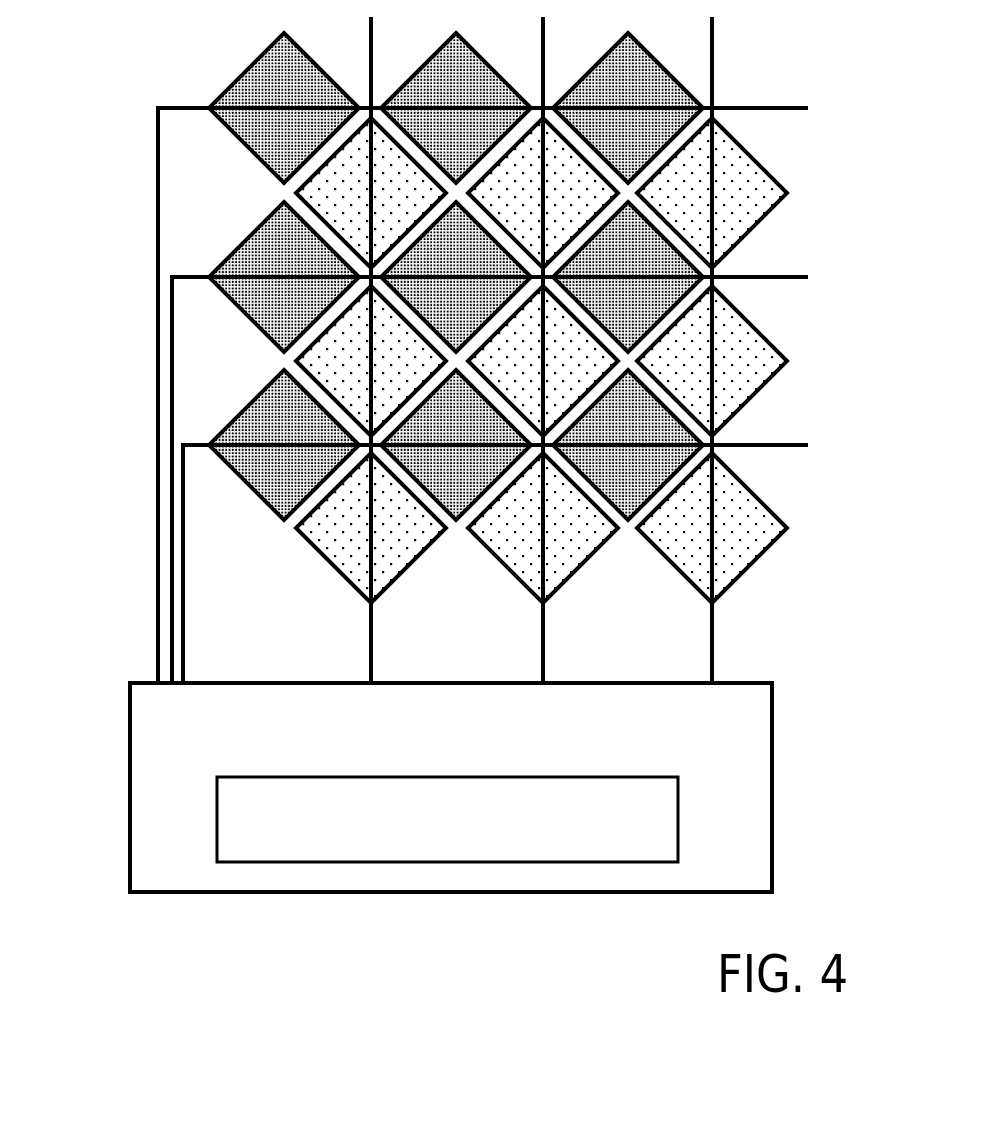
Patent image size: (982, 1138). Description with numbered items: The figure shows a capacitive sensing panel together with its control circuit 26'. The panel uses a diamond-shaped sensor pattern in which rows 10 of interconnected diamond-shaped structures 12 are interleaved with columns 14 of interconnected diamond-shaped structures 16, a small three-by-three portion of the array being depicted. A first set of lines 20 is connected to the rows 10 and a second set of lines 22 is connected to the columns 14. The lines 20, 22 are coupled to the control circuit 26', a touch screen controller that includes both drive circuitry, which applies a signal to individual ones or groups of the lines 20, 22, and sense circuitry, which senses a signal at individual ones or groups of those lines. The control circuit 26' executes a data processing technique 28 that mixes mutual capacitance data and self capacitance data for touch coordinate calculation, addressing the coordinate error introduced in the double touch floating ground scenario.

The rows 10 is at (442, 342).
The diamond-shaped structures 12 is at (245, 78).
The columns 14 is at (535, 396).
The diamond-shaped structures 16 is at (398, 562).
The first set of lines 20 is at (143, 407).
The second set of lines 22 is at (723, 635).
The control circuit 26' is at (397, 823).
The data processing technique 28 is at (340, 865).